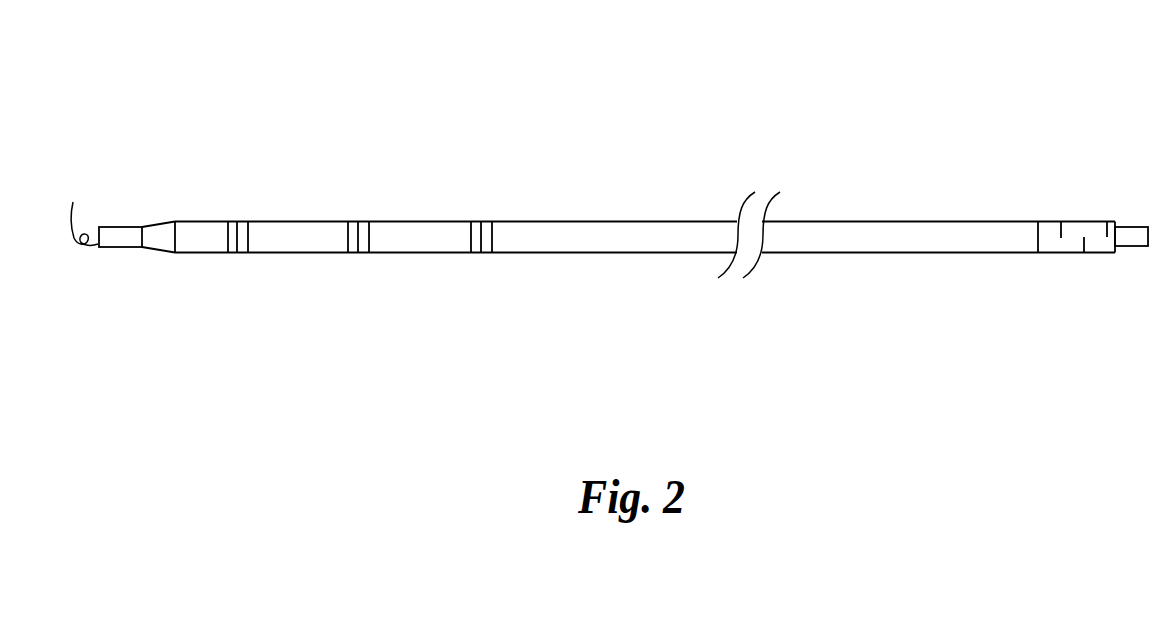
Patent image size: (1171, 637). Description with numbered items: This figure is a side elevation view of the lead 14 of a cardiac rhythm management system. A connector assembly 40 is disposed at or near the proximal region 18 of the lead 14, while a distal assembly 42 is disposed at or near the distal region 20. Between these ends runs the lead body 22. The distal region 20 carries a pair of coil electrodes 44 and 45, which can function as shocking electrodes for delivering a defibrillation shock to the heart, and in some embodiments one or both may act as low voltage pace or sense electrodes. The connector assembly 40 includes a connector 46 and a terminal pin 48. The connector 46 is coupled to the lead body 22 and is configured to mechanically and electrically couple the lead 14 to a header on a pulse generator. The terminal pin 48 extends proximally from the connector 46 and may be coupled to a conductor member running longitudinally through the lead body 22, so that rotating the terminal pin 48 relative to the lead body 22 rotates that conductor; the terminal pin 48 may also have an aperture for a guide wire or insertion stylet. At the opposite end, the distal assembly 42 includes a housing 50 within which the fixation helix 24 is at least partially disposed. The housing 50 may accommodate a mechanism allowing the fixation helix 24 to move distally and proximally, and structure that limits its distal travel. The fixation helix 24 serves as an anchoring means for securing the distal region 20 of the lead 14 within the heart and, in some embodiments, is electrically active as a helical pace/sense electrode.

The lead 14 is at (617, 88).
The proximal region 18 is at (968, 132).
The distal region 20 is at (241, 292).
The lead body 22 is at (646, 245).
The fixation helix 24 is at (75, 210).
The connector assembly 40 is at (1085, 273).
The distal assembly 42 is at (135, 198).
The coil electrode 44 is at (302, 230).
The coil electrode 45 is at (427, 230).
The connector 46 is at (1071, 222).
The terminal pin 48 is at (1133, 227).
The housing 50 is at (119, 245).